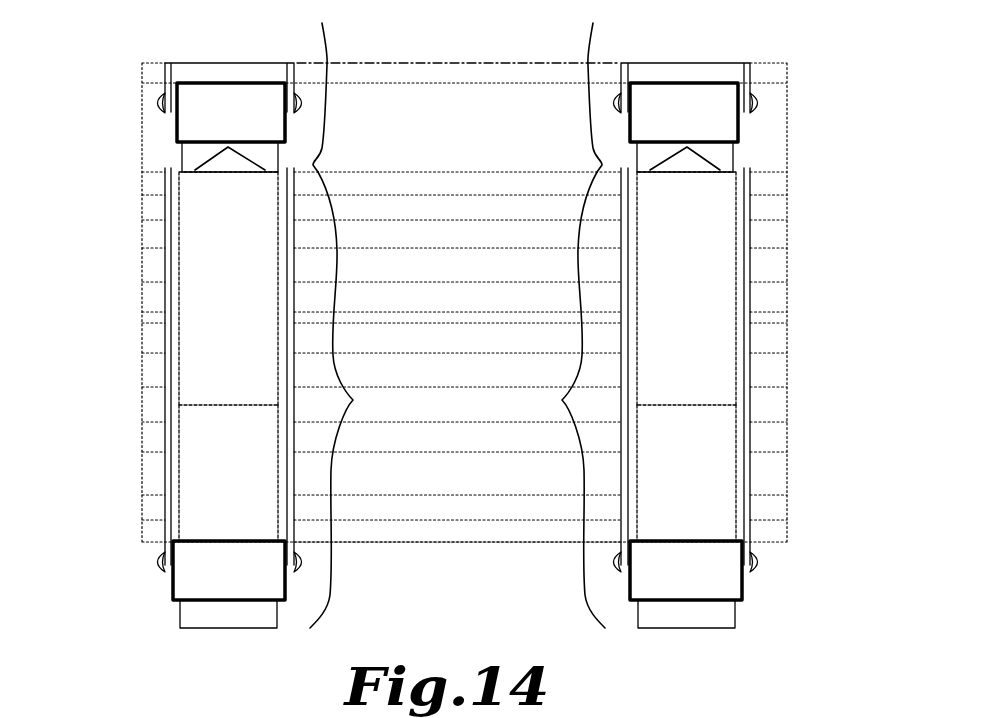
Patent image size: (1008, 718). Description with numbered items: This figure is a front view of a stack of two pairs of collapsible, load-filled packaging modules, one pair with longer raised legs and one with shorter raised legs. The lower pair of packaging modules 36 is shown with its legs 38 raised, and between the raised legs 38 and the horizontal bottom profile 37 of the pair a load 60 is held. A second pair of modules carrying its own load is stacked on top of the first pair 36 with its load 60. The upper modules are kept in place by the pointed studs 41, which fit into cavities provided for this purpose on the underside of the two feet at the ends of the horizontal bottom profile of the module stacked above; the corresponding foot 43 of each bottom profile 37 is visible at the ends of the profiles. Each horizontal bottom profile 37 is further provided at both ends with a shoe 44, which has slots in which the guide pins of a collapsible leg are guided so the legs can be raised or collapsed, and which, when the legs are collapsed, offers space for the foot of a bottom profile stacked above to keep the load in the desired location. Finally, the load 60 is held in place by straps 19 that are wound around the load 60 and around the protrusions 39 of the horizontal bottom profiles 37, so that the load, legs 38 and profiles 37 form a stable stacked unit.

The straps 19 is at (285, 72).
The packaging module 36 is at (356, 400).
The horizontal bottom profile 37 is at (177, 142).
The raised legs 38 is at (210, 318).
The protrusion 39 is at (152, 103).
The pointed studs 41 is at (212, 168).
The foot 43 is at (190, 615).
The shoe 44 is at (195, 418).
The load 60 is at (468, 222).